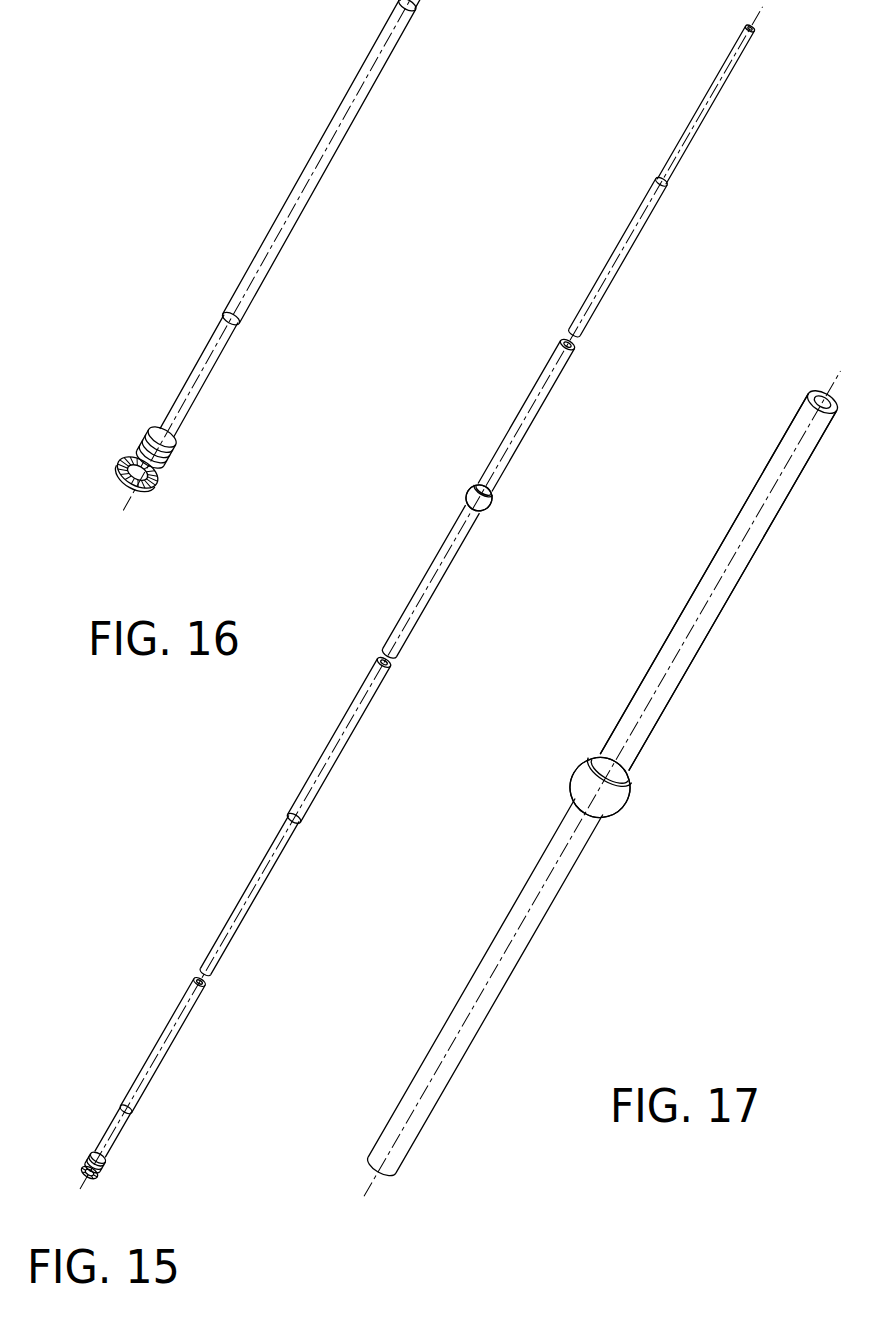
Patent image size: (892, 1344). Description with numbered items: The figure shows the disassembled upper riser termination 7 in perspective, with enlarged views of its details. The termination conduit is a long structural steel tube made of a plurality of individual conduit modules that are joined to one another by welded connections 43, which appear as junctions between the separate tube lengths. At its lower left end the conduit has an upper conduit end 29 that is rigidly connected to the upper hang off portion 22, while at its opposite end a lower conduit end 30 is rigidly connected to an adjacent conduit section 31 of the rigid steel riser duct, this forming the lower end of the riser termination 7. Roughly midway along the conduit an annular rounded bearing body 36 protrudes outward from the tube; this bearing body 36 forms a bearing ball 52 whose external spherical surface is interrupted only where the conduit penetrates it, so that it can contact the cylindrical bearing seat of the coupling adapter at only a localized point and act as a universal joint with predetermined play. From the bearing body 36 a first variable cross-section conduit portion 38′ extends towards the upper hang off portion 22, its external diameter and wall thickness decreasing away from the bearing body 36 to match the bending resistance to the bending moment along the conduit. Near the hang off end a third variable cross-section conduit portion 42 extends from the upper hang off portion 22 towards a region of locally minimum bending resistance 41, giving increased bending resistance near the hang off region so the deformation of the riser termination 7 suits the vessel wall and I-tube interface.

In FIG. 15, the upper riser termination 7 is at (318, 728).
In FIG. 16, the upper hang off portion 22 is at (160, 480).
In FIG. 15, the upper hang off portion 22 is at (96, 1170).
In FIG. 16, the upper conduit end 29 is at (143, 430).
In FIG. 15, the upper conduit end 29 is at (90, 1155).
In FIG. 15, the lower conduit end 30 is at (657, 180).
In FIG. 15, the adjacent conduit section 31 is at (742, 60).
In FIG. 15, the bearing body 36 is at (476, 490).
In FIG. 17, the bearing body 36 is at (585, 772).
In FIG. 15, the first variable cross-section conduit portion 38′ is at (406, 589).
In FIG. 17, the first variable cross-section conduit portion 38′ is at (494, 907).
In FIG. 16, the region of locally minimum bending resistance 41 is at (242, 334).
In FIG. 15, the region of locally minimum bending resistance 41 is at (112, 1100).
In FIG. 16, the third variable cross-section conduit portion 42 is at (293, 256).
In FIG. 15, the third variable cross-section conduit portion 42 is at (661, 217).
In FIG. 17, the third variable cross-section conduit portion 42 is at (705, 688).
In FIG. 15, the welded connections 43 is at (575, 383).
In FIG. 15, the bearing ball 52 is at (486, 512).
In FIG. 17, the bearing ball 52 is at (630, 803).